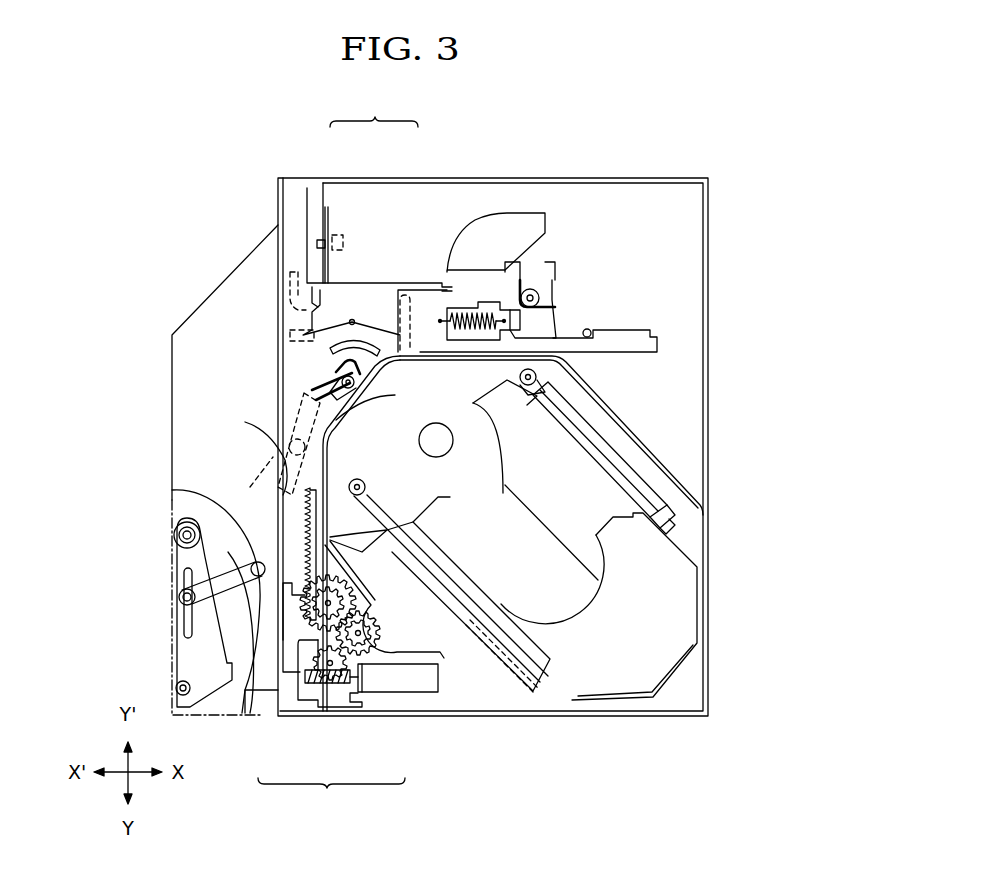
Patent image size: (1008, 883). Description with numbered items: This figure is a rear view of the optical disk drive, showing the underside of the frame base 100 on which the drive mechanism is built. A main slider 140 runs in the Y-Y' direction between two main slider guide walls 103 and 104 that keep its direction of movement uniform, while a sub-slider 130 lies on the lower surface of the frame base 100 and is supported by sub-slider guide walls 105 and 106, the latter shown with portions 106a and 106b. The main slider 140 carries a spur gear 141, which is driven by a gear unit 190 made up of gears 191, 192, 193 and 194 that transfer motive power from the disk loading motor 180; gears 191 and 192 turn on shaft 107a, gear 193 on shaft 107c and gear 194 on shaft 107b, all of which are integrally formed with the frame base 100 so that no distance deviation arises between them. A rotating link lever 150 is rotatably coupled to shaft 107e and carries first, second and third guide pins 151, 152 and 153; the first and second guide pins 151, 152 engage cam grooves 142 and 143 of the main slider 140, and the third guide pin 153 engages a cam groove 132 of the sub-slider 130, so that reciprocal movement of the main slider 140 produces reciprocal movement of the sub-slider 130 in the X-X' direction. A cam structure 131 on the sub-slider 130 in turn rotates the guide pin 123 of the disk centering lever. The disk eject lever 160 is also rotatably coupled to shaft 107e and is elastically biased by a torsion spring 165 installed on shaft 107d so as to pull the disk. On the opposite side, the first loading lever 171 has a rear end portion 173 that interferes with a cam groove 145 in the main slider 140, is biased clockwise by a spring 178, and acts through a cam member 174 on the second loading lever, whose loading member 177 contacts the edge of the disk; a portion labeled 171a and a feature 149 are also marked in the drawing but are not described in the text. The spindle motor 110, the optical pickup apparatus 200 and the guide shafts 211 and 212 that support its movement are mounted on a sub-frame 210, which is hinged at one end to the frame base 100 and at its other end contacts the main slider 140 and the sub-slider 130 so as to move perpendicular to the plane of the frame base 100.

The frame base 100 is at (603, 183).
The main slider guide wall 103 is at (228, 552).
The main slider guide wall 104 is at (367, 489).
The sub-slider guide wall 105 is at (502, 357).
The sub-slider guide wall 106 is at (374, 111).
The first guide portion 106a is at (329, 217).
The second guide portion 106b is at (404, 283).
The shaft 107a is at (335, 598).
The shaft 107b is at (376, 630).
The shaft 107c is at (370, 625).
The shaft 107d is at (537, 296).
The shaft 107e is at (352, 385).
The spindle motor 110 is at (448, 452).
The guide pin 123 is at (587, 329).
The sub-slider 130 is at (428, 300).
The cam structure 131 is at (597, 335).
The cam groove 132 is at (420, 333).
The main slider 140 is at (290, 182).
The spur gear 141 is at (414, 523).
The cam groove 142 is at (290, 335).
The cam groove 143 is at (292, 275).
The cam groove 145 is at (258, 432).
The stopper 149 is at (342, 236).
The rotating link lever 150 is at (320, 287).
The first guide pin 151 is at (290, 335).
The second guide pin 152 is at (353, 318).
The third guide pin 153 is at (426, 376).
The disk eject lever 160 is at (470, 268).
The torsion spring 165 is at (534, 290).
The first loading lever 171 is at (230, 554).
The link end 171a is at (308, 392).
The rear end portion 173 is at (260, 490).
The cam member 174 is at (190, 619).
The loading member 177 is at (180, 688).
The spring 178 is at (355, 412).
The disk loading motor 180 is at (424, 692).
The gear unit 190 is at (331, 795).
The gear 191 is at (320, 692).
The gear 192 is at (277, 700).
The gear 193 is at (335, 683).
The gear 194 is at (364, 680).
The optical pickup apparatus 200 is at (607, 716).
The sub-frame 210 is at (628, 448).
The guide shaft 211 is at (472, 600).
The guide shaft 212 is at (598, 457).